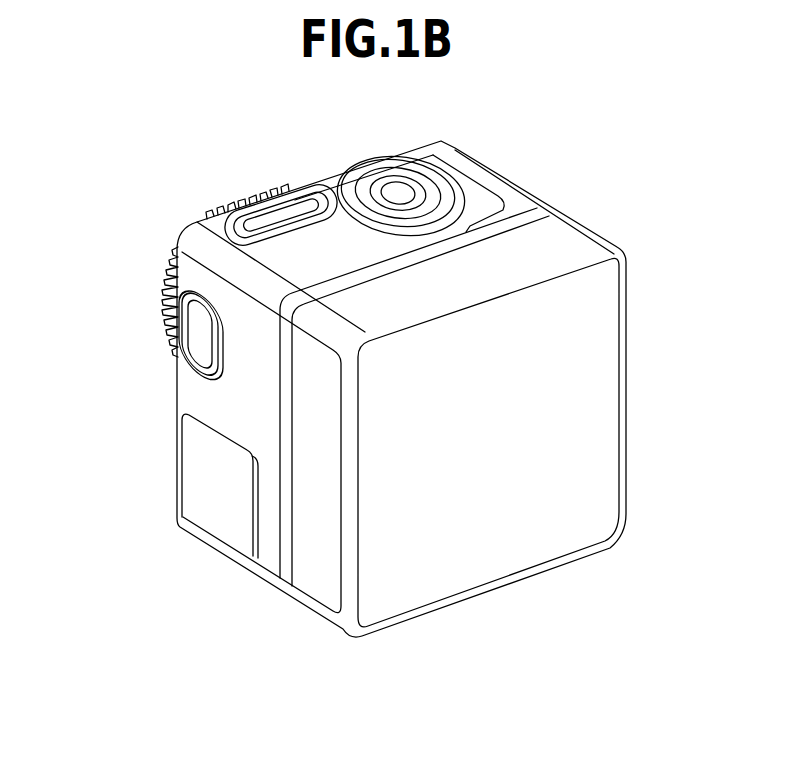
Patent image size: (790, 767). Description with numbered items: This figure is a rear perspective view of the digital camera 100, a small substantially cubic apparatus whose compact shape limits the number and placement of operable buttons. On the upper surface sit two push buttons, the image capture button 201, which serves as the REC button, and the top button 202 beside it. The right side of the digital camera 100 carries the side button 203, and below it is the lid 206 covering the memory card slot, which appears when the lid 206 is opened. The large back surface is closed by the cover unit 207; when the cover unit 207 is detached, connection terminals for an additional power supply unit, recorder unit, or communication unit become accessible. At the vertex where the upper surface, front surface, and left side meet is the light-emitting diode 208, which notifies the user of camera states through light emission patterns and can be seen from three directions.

The digital camera 100 is at (187, 155).
The image capture button 201 is at (397, 188).
The top button 202 is at (302, 210).
The side button 203 is at (197, 337).
The lid 206 is at (197, 463).
The cover unit 207 is at (442, 572).
The light-emitting diode 208 is at (449, 138).